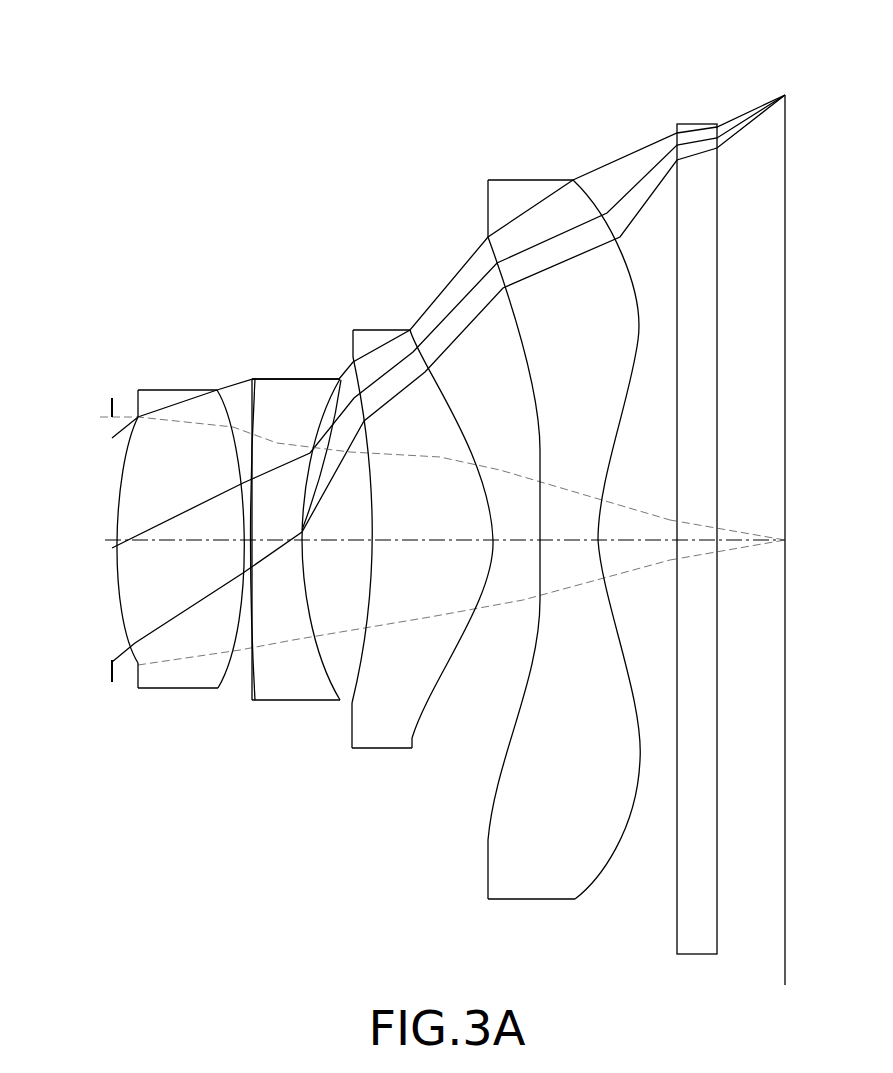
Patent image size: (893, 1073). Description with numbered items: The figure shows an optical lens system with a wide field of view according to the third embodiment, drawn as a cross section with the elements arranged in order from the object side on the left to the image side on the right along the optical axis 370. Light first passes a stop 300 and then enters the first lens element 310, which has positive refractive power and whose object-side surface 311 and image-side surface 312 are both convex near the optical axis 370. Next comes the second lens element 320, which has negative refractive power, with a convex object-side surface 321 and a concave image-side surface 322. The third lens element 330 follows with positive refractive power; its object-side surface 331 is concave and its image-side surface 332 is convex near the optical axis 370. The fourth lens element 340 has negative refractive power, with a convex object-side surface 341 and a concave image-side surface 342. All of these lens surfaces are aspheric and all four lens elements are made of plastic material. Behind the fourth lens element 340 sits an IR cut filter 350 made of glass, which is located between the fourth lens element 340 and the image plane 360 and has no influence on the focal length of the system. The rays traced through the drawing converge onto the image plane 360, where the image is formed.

The stop 300 is at (110, 397).
The first lens element 310 is at (164, 523).
The object-side surface 311 is at (123, 613).
The image-side surface 312 is at (231, 648).
The second lens element 320 is at (285, 535).
The object-side surface 321 is at (250, 650).
The image-side surface 322 is at (321, 658).
The third lens element 330 is at (402, 528).
The object-side surface 331 is at (358, 668).
The image-side surface 332 is at (434, 690).
The fourth lens element 340 is at (532, 525).
The object-side surface 341 is at (502, 782).
The image-side surface 342 is at (622, 847).
The IR cut filter 350 is at (698, 121).
The image plane 360 is at (782, 936).
The optical axis 370 is at (762, 533).